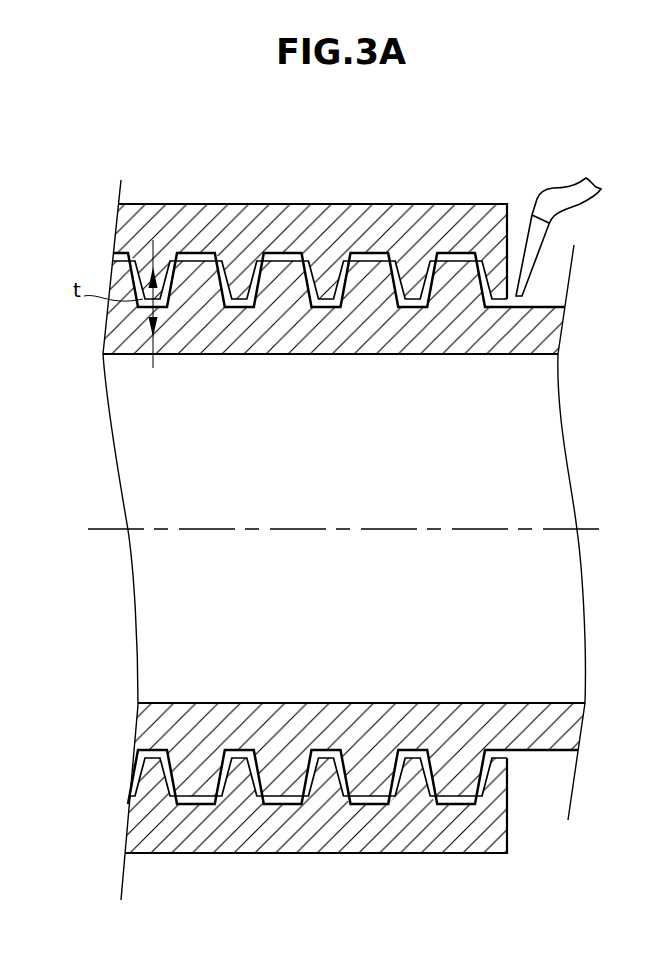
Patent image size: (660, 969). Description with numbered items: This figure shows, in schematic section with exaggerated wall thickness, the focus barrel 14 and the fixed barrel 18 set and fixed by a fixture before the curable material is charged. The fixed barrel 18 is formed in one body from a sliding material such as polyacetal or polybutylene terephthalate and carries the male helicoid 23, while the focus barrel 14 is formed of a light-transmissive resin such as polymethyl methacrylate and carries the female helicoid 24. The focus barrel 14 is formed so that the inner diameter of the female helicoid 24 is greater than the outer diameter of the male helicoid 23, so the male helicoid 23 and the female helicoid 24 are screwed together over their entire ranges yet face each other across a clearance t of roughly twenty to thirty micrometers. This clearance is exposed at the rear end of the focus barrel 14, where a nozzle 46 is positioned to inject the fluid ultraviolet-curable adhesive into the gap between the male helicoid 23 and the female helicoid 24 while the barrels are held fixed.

The focus barrel 14 is at (436, 212).
The fixed barrel 18 is at (452, 340).
The male helicoid 23 is at (310, 287).
The female helicoid 24 is at (148, 276).
The nozzle 46 is at (550, 198).